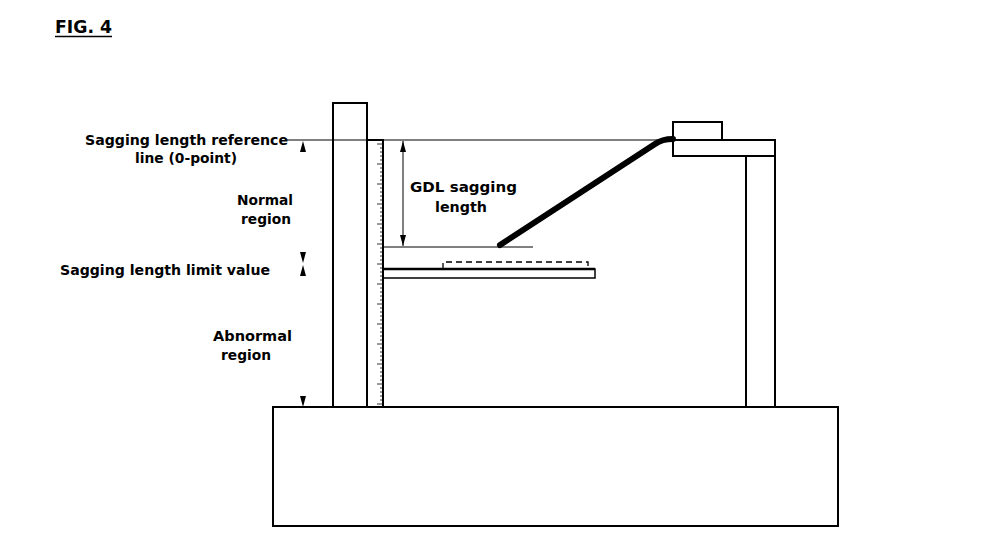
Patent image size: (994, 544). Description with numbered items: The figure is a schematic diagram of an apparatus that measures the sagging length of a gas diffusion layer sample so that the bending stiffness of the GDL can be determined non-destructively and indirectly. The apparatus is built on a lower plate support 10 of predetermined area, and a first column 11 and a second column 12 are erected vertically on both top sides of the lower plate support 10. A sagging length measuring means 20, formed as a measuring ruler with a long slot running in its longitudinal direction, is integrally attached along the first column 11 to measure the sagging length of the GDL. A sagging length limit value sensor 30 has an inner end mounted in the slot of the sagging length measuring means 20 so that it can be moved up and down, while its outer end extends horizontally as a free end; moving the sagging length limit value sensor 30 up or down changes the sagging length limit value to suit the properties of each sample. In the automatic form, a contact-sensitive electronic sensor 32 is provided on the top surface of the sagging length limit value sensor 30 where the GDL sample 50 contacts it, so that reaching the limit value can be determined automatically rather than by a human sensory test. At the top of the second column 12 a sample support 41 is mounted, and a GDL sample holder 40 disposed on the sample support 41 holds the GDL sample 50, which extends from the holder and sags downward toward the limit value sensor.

The lower plate support 10 is at (285, 497).
The first column 11 is at (340, 378).
The second column 12 is at (767, 360).
The sagging length measuring means 20 is at (372, 385).
The sagging length limit value sensor 30 is at (525, 279).
The contact-sensitive electronic sensor 32 is at (588, 262).
The GDL sample holder 40 is at (728, 120).
The sample support 41 is at (767, 150).
The GDL sample 50 is at (635, 147).